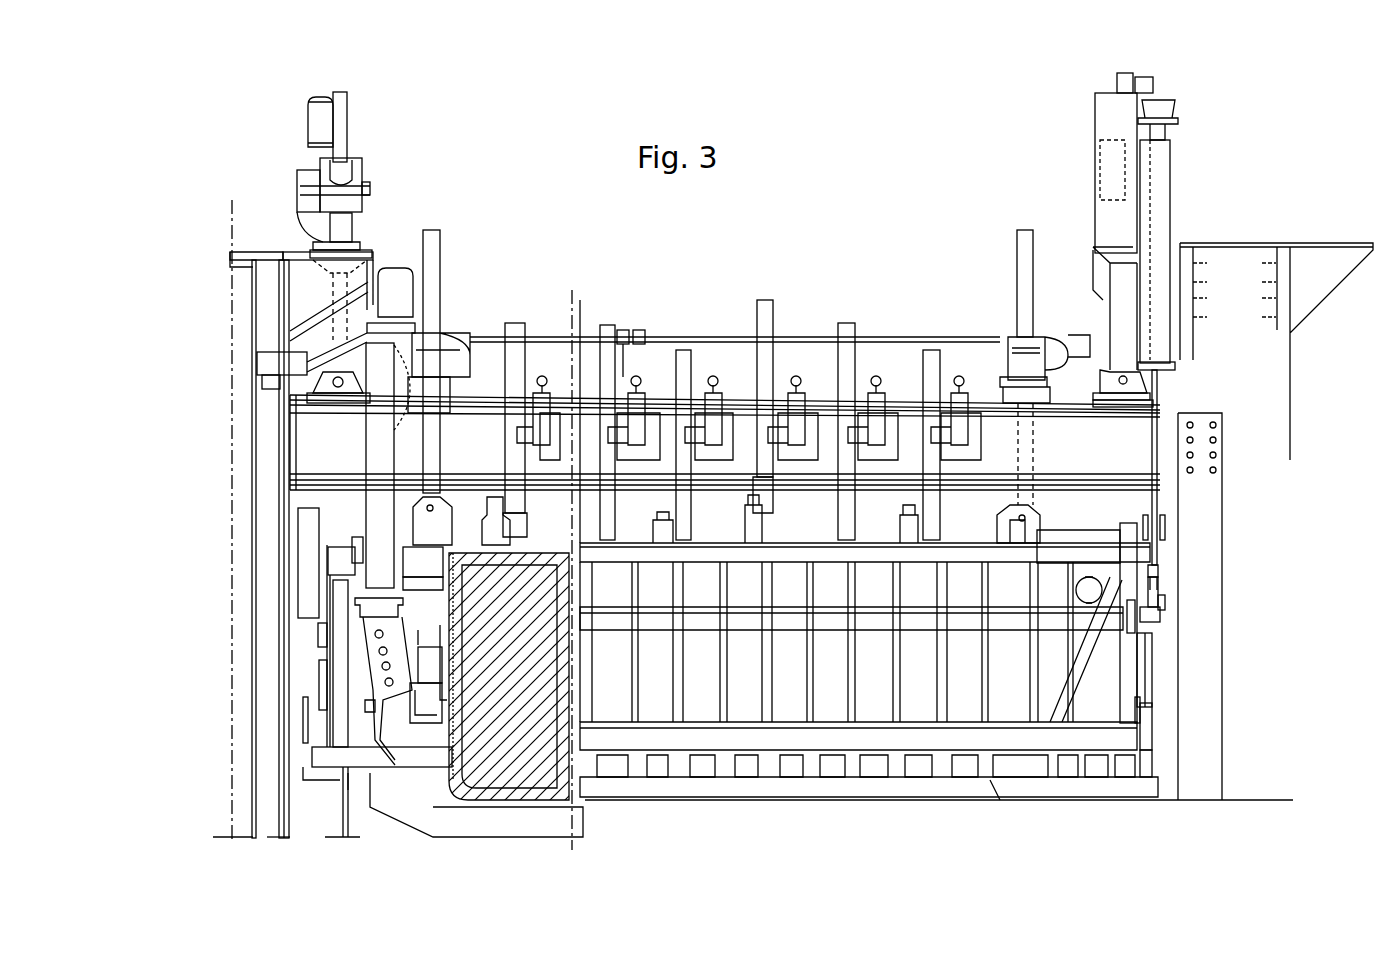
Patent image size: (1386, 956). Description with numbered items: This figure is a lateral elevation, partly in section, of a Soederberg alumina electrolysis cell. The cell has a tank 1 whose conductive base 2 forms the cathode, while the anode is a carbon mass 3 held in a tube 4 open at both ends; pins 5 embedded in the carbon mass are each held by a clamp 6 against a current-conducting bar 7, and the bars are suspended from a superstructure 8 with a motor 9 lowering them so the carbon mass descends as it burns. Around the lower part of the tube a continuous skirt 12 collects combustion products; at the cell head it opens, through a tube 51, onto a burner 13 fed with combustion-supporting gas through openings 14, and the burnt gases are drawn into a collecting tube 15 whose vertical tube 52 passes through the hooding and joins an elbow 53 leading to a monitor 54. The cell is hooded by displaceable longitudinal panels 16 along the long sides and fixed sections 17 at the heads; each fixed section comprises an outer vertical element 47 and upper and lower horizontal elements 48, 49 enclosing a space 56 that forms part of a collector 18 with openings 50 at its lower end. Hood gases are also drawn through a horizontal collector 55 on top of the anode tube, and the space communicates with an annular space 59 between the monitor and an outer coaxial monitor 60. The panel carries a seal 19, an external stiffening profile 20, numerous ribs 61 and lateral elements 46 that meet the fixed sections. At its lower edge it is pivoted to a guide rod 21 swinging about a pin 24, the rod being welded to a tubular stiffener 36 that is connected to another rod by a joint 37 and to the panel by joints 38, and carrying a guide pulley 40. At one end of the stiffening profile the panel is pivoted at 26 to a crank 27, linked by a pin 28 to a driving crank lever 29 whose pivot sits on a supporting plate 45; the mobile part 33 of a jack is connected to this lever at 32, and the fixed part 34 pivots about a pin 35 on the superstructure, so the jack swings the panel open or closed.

The tank 1 is at (343, 822).
The base 2 is at (500, 826).
The carbon mass 3 is at (533, 763).
The tube 4 is at (457, 626).
The pins 5 is at (487, 522).
The clamp 6 is at (638, 413).
The bar 7 is at (478, 458).
The superstructure 8 is at (1290, 353).
The motor 9 is at (306, 122).
The skirt 12 is at (383, 757).
The burner 13 is at (450, 673).
The air intake openings 14 is at (382, 633).
The collecting tube 15 is at (246, 369).
The longitudinal panel 16 is at (707, 700).
The fixed sections 17 is at (300, 680).
The collector 18 is at (326, 553).
The seal 19 is at (762, 560).
The stiffening profile 20 is at (958, 617).
The guide rod 21 is at (1150, 687).
The pin 24 is at (318, 627).
The pivotal connection 26 is at (1148, 623).
The crank 27 is at (1148, 617).
The pin 28 is at (1153, 610).
The driving crank lever 29 is at (1163, 530).
The pivotal connection 32 is at (1158, 575).
The mobile part of jack 33 is at (1152, 440).
The fixed part of jack 34 is at (1170, 168).
The pin 35 is at (1170, 130).
The tubular stiffener 36 is at (1170, 625).
The joint 37 is at (1153, 723).
The joints 38 is at (820, 722).
The guide pulley 40 is at (1150, 697).
The supporting plate 45 is at (1143, 512).
The lateral elements 46 is at (1120, 690).
The outer vertical element 47 is at (325, 657).
The outer horizontal upper element 48 is at (345, 545).
The lower horizontal element 49 is at (320, 590).
The openings 50 is at (378, 691).
The tube 51 is at (373, 707).
The vertical tube 52 is at (372, 449).
The elbow 53 is at (380, 350).
The monitor 54 is at (243, 487).
The horizontal collector 55 is at (438, 562).
The space 56 is at (330, 570).
The annular space 59 is at (263, 502).
The outer coaxial monitor 60 is at (272, 556).
The ribs 61 is at (767, 647).